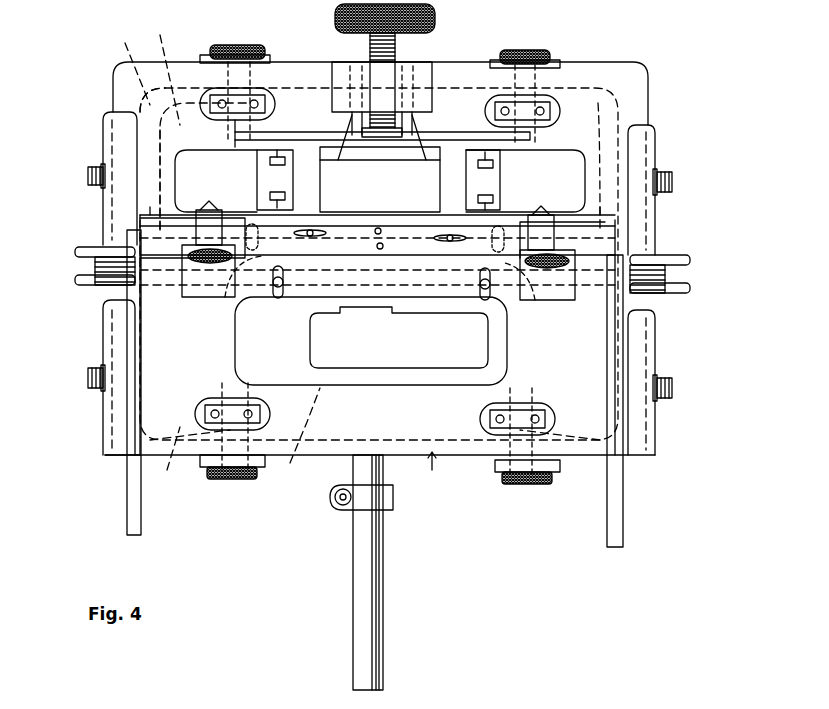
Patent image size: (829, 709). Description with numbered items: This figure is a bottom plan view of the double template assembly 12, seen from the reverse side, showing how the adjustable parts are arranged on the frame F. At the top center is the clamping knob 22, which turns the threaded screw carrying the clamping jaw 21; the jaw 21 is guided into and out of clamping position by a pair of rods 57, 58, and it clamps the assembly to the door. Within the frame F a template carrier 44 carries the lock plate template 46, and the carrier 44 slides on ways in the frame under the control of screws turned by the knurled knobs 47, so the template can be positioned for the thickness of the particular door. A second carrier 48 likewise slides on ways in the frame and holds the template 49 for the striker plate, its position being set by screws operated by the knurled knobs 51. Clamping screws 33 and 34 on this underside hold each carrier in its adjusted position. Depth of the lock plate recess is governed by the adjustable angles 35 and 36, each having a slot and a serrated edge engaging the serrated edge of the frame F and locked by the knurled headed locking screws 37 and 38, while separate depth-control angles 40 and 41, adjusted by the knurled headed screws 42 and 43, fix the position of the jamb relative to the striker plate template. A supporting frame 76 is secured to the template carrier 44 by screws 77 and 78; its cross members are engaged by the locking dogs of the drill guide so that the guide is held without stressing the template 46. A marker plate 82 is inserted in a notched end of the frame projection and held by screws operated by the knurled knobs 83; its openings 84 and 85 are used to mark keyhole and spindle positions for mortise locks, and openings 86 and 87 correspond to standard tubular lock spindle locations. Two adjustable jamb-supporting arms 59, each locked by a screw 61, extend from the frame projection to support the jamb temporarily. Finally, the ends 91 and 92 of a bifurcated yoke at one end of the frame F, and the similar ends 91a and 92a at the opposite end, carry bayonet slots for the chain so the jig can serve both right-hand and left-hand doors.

The double template assembly 12 is at (660, 38).
The clamping jaw 21 is at (248, 133).
The clamping knob 22 is at (436, 14).
The clamping screw 33 is at (250, 232).
The clamping screw 34 is at (275, 291).
The adjustable angle 35 is at (108, 127).
The adjustable angle 36 is at (648, 130).
The knurled headed locking screw 37 is at (88, 178).
The knurled headed locking screw 38 is at (674, 183).
The depth-control angle 40 is at (108, 332).
The depth-control angle 41 is at (652, 340).
The knurled headed screw 42 is at (88, 378).
The knurled headed screw 43 is at (674, 388).
The template carrier 44 is at (135, 66).
The template 46 is at (162, 121).
The knurled knob 47 is at (240, 52).
The carrier 48 is at (143, 460).
The template 49 is at (371, 393).
The knurled knob 51 is at (222, 479).
The rod 57 is at (365, 118).
The rod 58 is at (408, 117).
The jamb-supporting arm 59 is at (130, 510).
The locking screw 61 is at (95, 265).
The supporting frame 76 is at (312, 172).
The screw 77 is at (495, 164).
The screw 78 is at (270, 195).
The marker plate 82 is at (390, 225).
The knurled knob 83 is at (200, 259).
The opening 84 is at (315, 233).
The opening 85 is at (452, 241).
The opening 86 is at (380, 250).
The opening 87 is at (375, 234).
The yoke end 91 is at (97, 283).
The yoke end 91a is at (662, 291).
The yoke end 92 is at (105, 248).
The yoke end 92a is at (660, 257).
The frame F is at (430, 473).